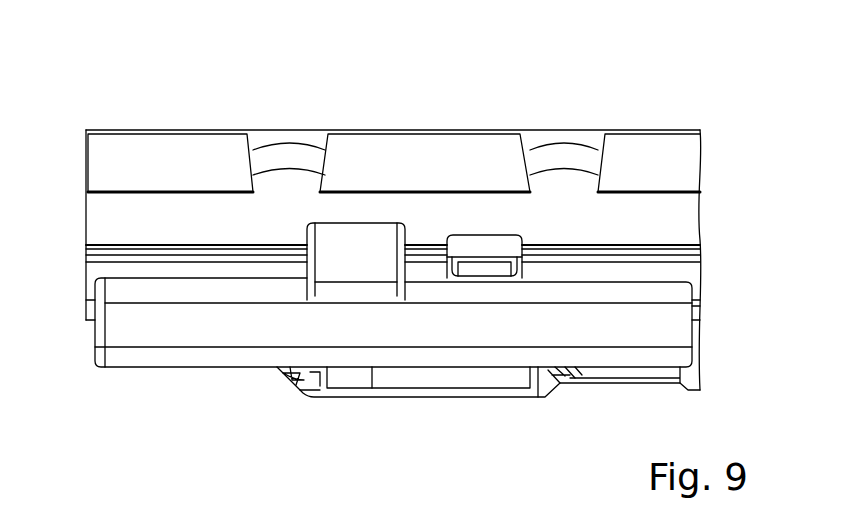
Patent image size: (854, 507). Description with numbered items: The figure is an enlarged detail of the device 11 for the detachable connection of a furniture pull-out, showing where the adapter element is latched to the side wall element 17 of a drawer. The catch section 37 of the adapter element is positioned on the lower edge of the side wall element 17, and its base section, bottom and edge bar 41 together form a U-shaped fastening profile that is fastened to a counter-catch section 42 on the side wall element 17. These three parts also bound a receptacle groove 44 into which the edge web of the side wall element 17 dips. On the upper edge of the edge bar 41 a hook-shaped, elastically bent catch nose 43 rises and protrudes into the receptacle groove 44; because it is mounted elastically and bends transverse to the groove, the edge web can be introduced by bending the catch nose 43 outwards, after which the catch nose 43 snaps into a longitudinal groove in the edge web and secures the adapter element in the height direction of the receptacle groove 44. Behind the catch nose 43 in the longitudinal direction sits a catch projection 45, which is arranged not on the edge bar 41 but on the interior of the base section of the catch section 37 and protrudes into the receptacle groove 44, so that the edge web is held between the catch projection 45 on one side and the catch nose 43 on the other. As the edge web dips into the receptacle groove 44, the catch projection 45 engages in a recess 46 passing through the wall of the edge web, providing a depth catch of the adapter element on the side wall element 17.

The device 11 is at (484, 96).
The side wall element 17 is at (683, 232).
The catch section 37 is at (219, 383).
The edge bar 41 is at (607, 330).
The counter-catch section 42 is at (553, 208).
The catch nose 43 is at (362, 235).
The receptacle groove 44 is at (110, 263).
The catch projection 45 is at (475, 265).
The recess 46 is at (507, 245).